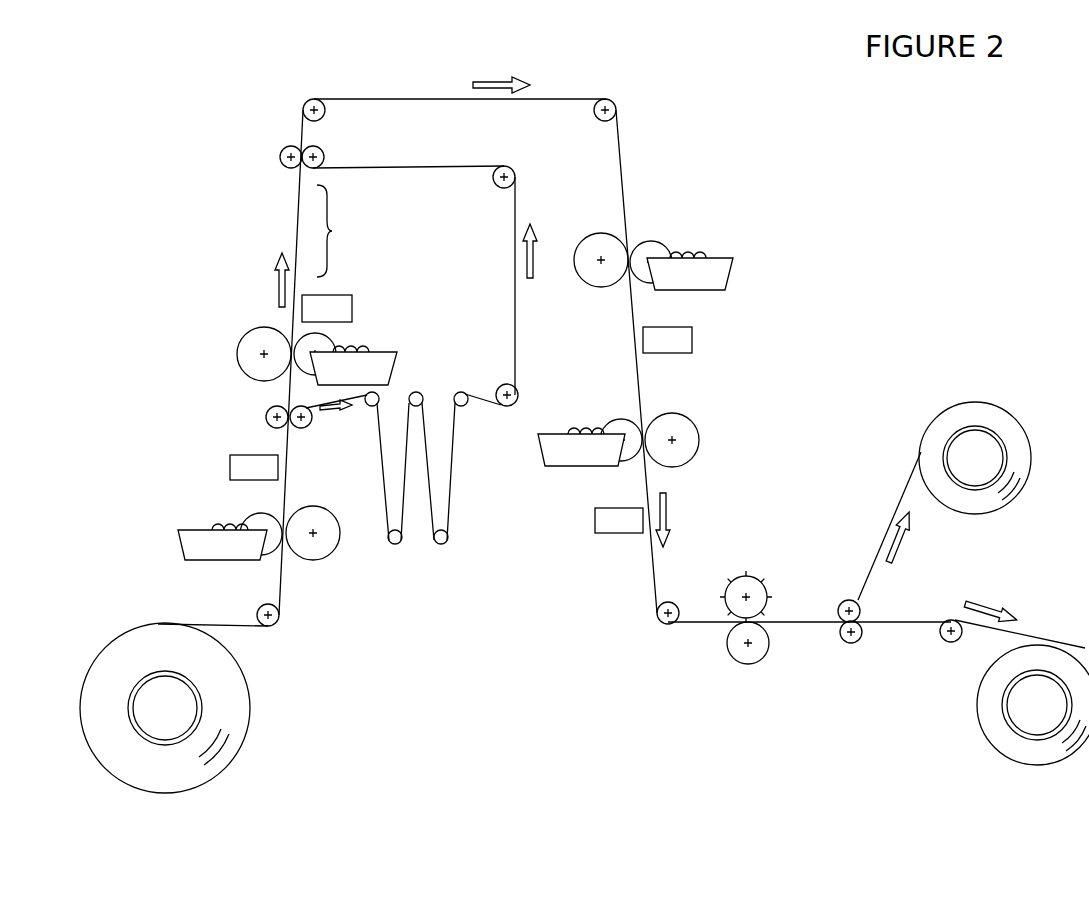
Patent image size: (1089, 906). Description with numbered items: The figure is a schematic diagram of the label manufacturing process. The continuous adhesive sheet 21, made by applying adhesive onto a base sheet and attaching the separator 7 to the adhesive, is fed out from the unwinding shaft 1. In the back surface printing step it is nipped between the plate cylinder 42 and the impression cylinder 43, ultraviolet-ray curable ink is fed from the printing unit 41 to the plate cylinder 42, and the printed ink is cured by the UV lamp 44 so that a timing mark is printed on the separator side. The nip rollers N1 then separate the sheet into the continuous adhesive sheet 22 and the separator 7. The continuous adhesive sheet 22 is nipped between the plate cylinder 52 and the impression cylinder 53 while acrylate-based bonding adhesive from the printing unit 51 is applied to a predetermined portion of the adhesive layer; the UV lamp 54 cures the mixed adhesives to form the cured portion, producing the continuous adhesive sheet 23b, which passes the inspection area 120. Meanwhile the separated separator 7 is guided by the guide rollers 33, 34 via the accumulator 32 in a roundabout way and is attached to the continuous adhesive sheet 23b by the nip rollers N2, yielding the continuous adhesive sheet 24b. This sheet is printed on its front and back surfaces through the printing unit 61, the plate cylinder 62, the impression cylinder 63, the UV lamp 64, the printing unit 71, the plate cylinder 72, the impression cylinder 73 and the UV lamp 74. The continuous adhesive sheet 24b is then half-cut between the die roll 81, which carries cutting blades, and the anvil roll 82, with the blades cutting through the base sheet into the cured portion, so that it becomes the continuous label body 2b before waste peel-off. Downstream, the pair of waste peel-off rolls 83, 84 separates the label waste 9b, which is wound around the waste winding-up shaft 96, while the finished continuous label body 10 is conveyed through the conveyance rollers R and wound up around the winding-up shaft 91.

The unwinding shaft 1 is at (173, 708).
The continuous adhesive sheet 21 is at (222, 623).
The continuous adhesive sheet 22 is at (285, 397).
The continuous adhesive sheet 23b is at (295, 242).
The continuous adhesive sheet 24b is at (393, 99).
The inspection area 120 is at (343, 231).
The nip rollers N1 is at (304, 437).
The nip rollers N2 is at (278, 141).
The conveyance rollers R is at (323, 118).
The accumulator 32 is at (429, 553).
The guide roller 33 is at (507, 407).
The guide roller 34 is at (514, 173).
The separator 7 is at (515, 330).
The printing unit 41 is at (186, 542).
The plate cylinder 42 is at (258, 517).
The impression cylinder 43 is at (303, 548).
The UV lamp 44 is at (238, 465).
The printing unit 51 is at (388, 360).
The plate cylinder 52 is at (330, 343).
The impression cylinder 53 is at (245, 347).
The UV lamp 54 is at (342, 310).
The printing unit 61 is at (723, 275).
The plate cylinder 62 is at (650, 242).
The impression cylinder 63 is at (597, 240).
The UV lamp 64 is at (686, 345).
The printing unit 71 is at (560, 457).
The plate cylinder 72 is at (620, 425).
The impression cylinder 73 is at (685, 433).
The UV lamp 74 is at (612, 530).
The die roll 81 is at (758, 583).
The anvil roll 82 is at (750, 660).
The waste peel-off roll 83 is at (850, 600).
The waste peel-off roll 84 is at (850, 650).
The continuous label body 2b is at (806, 620).
The label waste 9b is at (898, 500).
The waste winding-up shaft 96 is at (985, 445).
The continuous label body 10 is at (908, 620).
The winding-up shaft 91 is at (1038, 705).